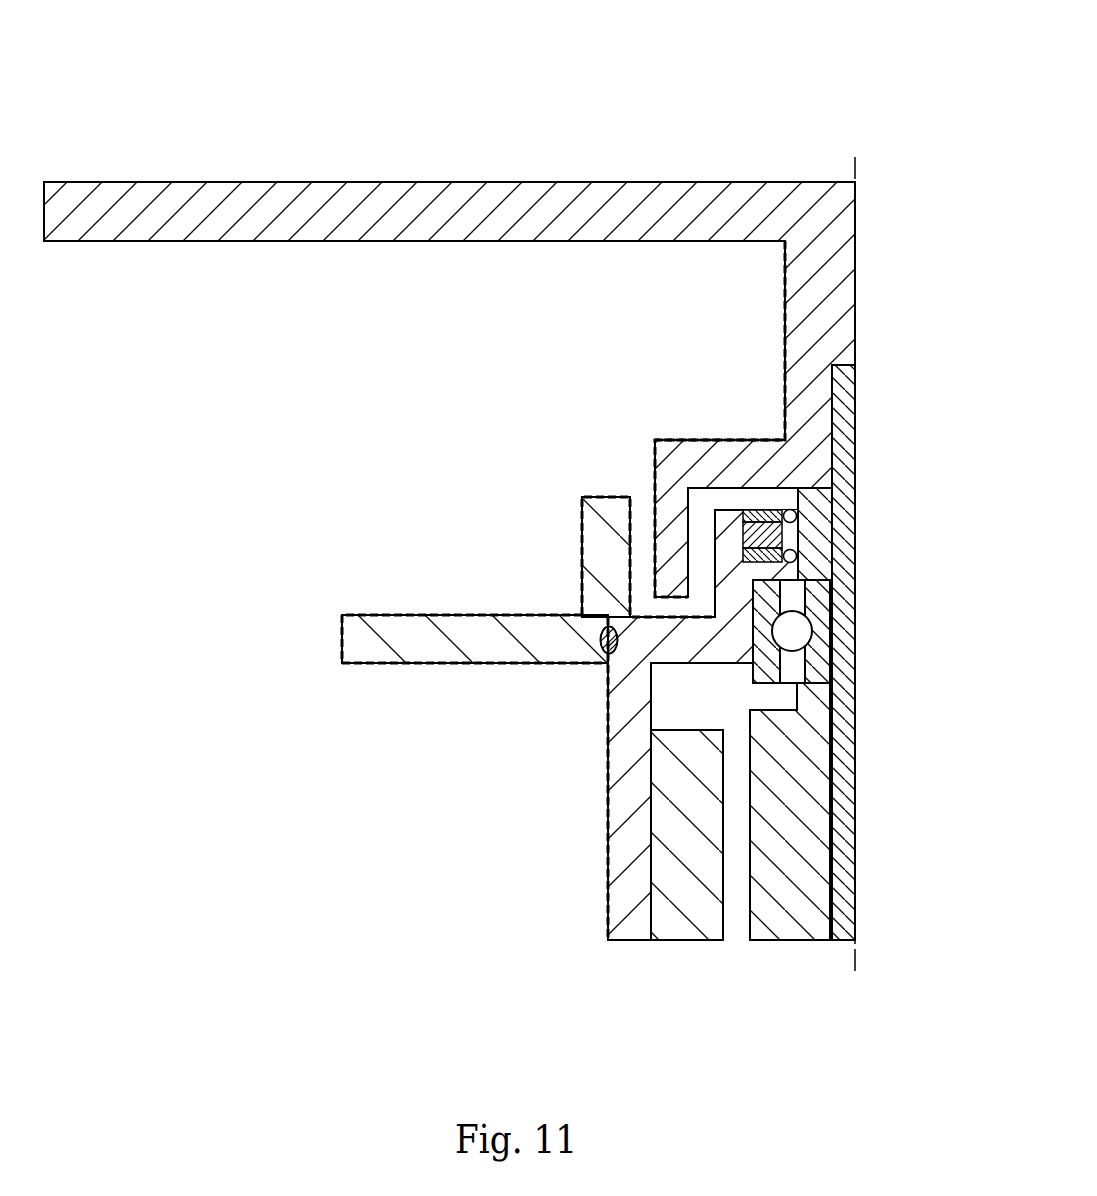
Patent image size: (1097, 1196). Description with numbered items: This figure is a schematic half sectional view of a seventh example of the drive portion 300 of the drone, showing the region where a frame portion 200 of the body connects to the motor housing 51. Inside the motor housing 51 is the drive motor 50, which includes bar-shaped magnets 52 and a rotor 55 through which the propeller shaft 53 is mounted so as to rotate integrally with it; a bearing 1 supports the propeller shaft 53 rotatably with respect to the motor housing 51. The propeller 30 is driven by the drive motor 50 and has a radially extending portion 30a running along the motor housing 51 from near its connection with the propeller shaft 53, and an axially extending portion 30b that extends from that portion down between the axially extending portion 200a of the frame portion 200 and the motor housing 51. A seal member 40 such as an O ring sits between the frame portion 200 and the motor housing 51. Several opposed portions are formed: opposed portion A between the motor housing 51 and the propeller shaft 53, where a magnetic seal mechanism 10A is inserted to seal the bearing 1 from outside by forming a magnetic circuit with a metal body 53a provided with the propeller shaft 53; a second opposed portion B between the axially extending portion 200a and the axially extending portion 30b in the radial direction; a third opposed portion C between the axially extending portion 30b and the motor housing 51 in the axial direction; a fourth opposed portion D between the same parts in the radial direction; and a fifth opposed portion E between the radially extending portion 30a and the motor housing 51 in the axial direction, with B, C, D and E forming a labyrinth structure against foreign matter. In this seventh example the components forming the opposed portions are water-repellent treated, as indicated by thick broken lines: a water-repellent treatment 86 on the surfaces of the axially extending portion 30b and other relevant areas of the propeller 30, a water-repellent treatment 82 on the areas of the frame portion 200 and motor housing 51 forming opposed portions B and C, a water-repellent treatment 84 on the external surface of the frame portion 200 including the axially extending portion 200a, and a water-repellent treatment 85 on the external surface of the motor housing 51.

The drive portion 300 is at (829, 116).
The propeller 30 is at (449, 346).
The radially extending portion 30a is at (722, 455).
The axially extending portion 30b is at (672, 607).
The water-repellent treatment 86 is at (690, 437).
The propeller shaft 53 is at (850, 455).
The metal body 53a is at (820, 507).
The drive motor 50 is at (735, 689).
The motor housing 51 is at (655, 725).
The bar-shaped magnets 52 is at (688, 905).
The rotor 55 is at (800, 838).
The water-repellent treatment 85 is at (605, 830).
The magnetic seal mechanism 10A is at (769, 499).
The bearing 1 is at (820, 655).
The frame portion 200 is at (486, 627).
The axially extending portion 200a is at (600, 523).
The water-repellent treatment 84 is at (440, 612).
The water-repellent treatment 82 is at (628, 592).
The seal member 40 is at (601, 641).
The opposed portion A is at (816, 556).
The second opposed portion B is at (646, 555).
The third opposed portion C is at (650, 622).
The fourth opposed portion D is at (708, 585).
The fifth opposed portion E is at (736, 494).